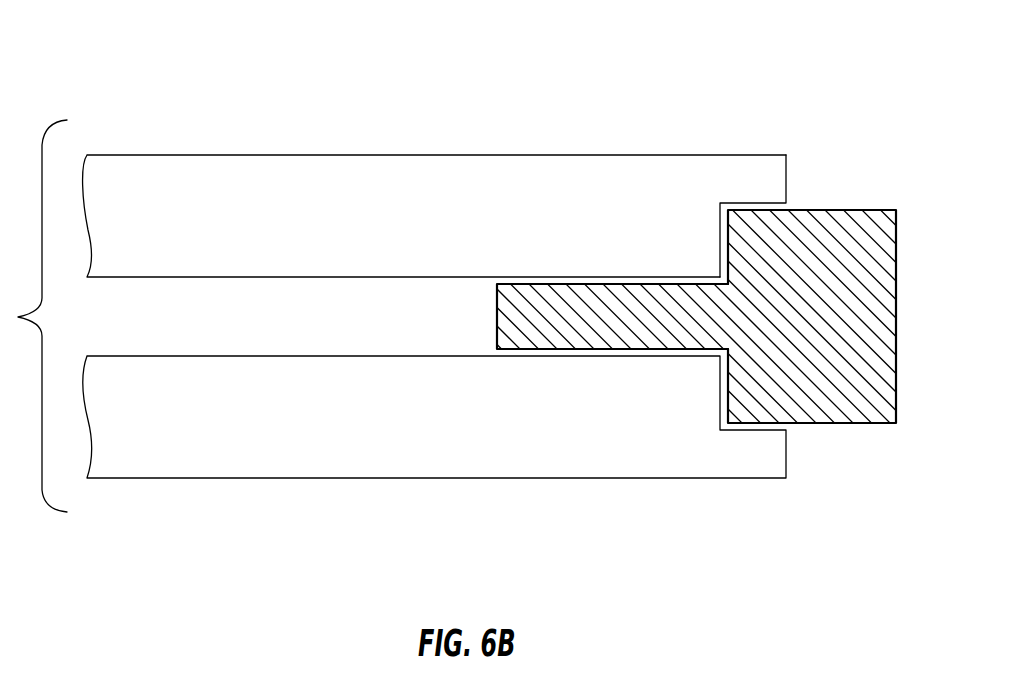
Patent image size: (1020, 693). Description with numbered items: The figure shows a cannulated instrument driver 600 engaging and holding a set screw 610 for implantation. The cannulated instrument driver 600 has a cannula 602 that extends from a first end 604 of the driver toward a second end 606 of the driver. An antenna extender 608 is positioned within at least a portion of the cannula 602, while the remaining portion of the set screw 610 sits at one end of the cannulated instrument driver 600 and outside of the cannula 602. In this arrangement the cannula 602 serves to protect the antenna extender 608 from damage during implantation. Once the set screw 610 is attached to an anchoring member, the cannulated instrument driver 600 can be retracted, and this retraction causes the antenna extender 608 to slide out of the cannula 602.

The cannulated instrument driver 600 is at (533, 172).
The cannula 602 is at (420, 323).
The first end 604 is at (786, 177).
The second end 606 is at (106, 98).
The antenna extender 608 is at (610, 349).
The set screw 610 is at (887, 210).